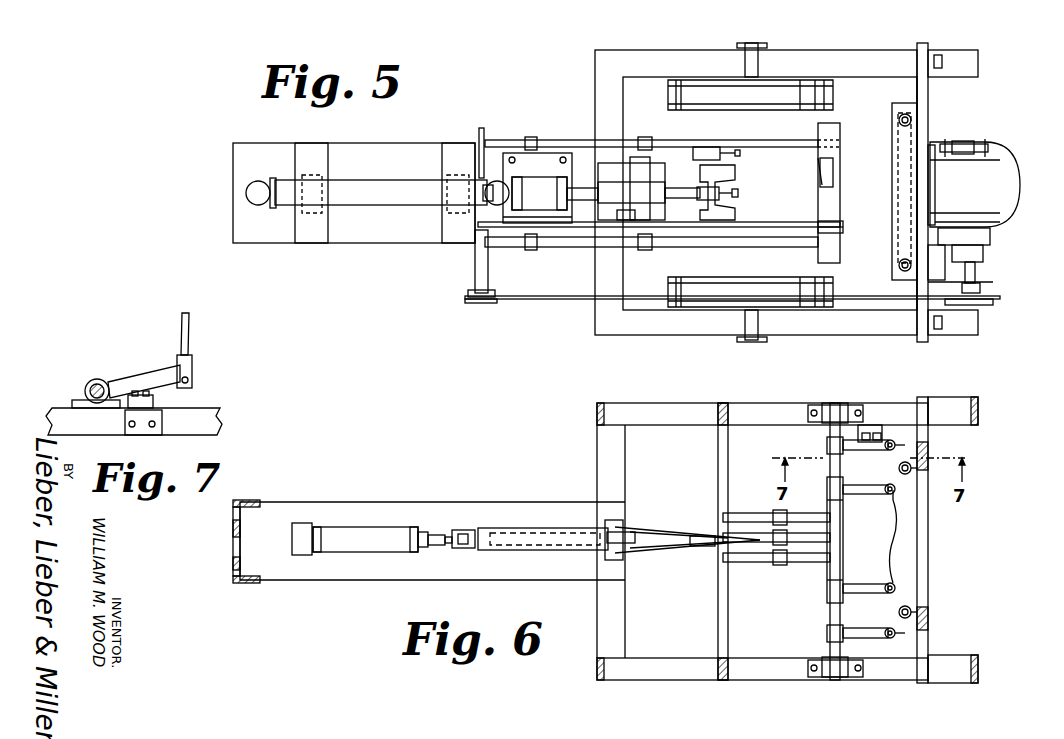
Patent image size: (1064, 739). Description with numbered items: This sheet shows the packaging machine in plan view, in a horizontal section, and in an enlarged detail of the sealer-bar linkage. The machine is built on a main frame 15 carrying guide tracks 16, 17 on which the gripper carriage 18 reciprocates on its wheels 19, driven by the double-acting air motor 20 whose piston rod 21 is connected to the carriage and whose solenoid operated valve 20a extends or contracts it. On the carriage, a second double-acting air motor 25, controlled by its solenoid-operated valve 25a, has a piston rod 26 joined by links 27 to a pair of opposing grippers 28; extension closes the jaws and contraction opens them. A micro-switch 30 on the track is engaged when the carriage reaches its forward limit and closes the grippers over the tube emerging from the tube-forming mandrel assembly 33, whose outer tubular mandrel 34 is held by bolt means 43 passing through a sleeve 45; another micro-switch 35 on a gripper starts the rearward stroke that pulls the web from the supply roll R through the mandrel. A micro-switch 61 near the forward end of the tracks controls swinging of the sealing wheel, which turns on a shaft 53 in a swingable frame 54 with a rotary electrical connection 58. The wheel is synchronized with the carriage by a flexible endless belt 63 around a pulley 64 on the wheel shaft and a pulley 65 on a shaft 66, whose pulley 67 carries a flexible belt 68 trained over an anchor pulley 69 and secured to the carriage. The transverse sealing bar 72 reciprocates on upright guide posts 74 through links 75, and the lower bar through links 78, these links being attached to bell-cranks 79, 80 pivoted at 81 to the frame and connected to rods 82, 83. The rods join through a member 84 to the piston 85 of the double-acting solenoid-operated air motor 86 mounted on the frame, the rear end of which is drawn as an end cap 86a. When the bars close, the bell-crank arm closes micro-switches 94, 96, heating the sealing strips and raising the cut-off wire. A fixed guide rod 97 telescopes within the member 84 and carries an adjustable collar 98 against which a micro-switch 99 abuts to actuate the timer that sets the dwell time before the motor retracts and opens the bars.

In FIG. 5, the main frame 15 is at (622, 66).
In FIG. 6, the main frame 15 is at (600, 410).
In FIG. 7, the main frame 15 is at (205, 412).
In FIG. 5, the supply roll R is at (828, 97).
In FIG. 5, the guide track 16 is at (790, 266).
In FIG. 5, the guide track 17 is at (775, 141).
In FIG. 5, the gripper carriage 18 is at (542, 163).
In FIG. 5, the wheels 19 is at (531, 250).
In FIG. 5, the double-acting air motor 20 is at (372, 185).
In FIG. 5, the solenoid operated valve 20a is at (258, 182).
In FIG. 5, the piston rod 21 is at (485, 205).
In FIG. 5, the double-acting air motor 25 is at (545, 180).
In FIG. 5, the solenoid-operated valve 25a is at (488, 187).
In FIG. 5, the piston rod 26 is at (578, 188).
In FIG. 5, the links 27 is at (620, 180).
In FIG. 5, the grippers 28 is at (722, 172).
In FIG. 5, the micro-switch 30 is at (696, 147).
In FIG. 5, the tube-forming mandrel assembly 33 is at (1024, 196).
In FIG. 5, the outer tubular mandrel 34 is at (995, 222).
In FIG. 5, the micro-switch 35 is at (728, 190).
In FIG. 5, the bolt means 43 is at (977, 142).
In FIG. 5, the sleeve 45 is at (958, 142).
In FIG. 5, the shaft 53 is at (975, 273).
In FIG. 5, the frame 54 is at (980, 285).
In FIG. 5, the rotary electrical connection 58 is at (983, 254).
In FIG. 5, the micro-switch 61 is at (834, 172).
In FIG. 5, the flexible endless belt 63 is at (555, 300).
In FIG. 5, the pulley 64 is at (993, 304).
In FIG. 5, the pulley 65 is at (472, 300).
In FIG. 5, the shaft 66 is at (482, 305).
In FIG. 5, the pulley 67 is at (475, 248).
In FIG. 5, the flexible belt 68 is at (778, 226).
In FIG. 5, the anchor pulley 69 is at (843, 226).
In FIG. 5, the bar 72 is at (890, 143).
In FIG. 5, the guide posts 74 is at (905, 113).
In FIG. 6, the guide posts 74 is at (908, 474).
In FIG. 6, the links 75 is at (895, 447).
In FIG. 7, the links 75 is at (189, 332).
In FIG. 6, the links 78 is at (893, 527).
In FIG. 6, the bell-crank 79 is at (864, 452).
In FIG. 7, the bell-crank 79 is at (157, 382).
In FIG. 6, the bell-crank 80 is at (805, 517).
In FIG. 6, the pivot 81 is at (830, 613).
In FIG. 7, the pivot 81 is at (86, 388).
In FIG. 6, the rod 82 is at (743, 543).
In FIG. 6, the rod 83 is at (743, 518).
In FIG. 6, the member 84 is at (518, 528).
In FIG. 6, the piston 85 is at (430, 533).
In FIG. 6, the double-acting solenoid-operated air motor 86 is at (353, 533).
In FIG. 6, the cylinder end cap 86a is at (302, 523).
In FIG. 6, the micro-switch 94 is at (866, 425).
In FIG. 7, the micro-switch 94 is at (128, 398).
In FIG. 6, the micro-switch 96 is at (877, 433).
In FIG. 7, the micro-switch 96 is at (153, 402).
In FIG. 6, the fixed guide rod 97 is at (663, 545).
In FIG. 6, the collar 98 is at (690, 548).
In FIG. 6, the micro-switch 99 is at (623, 540).